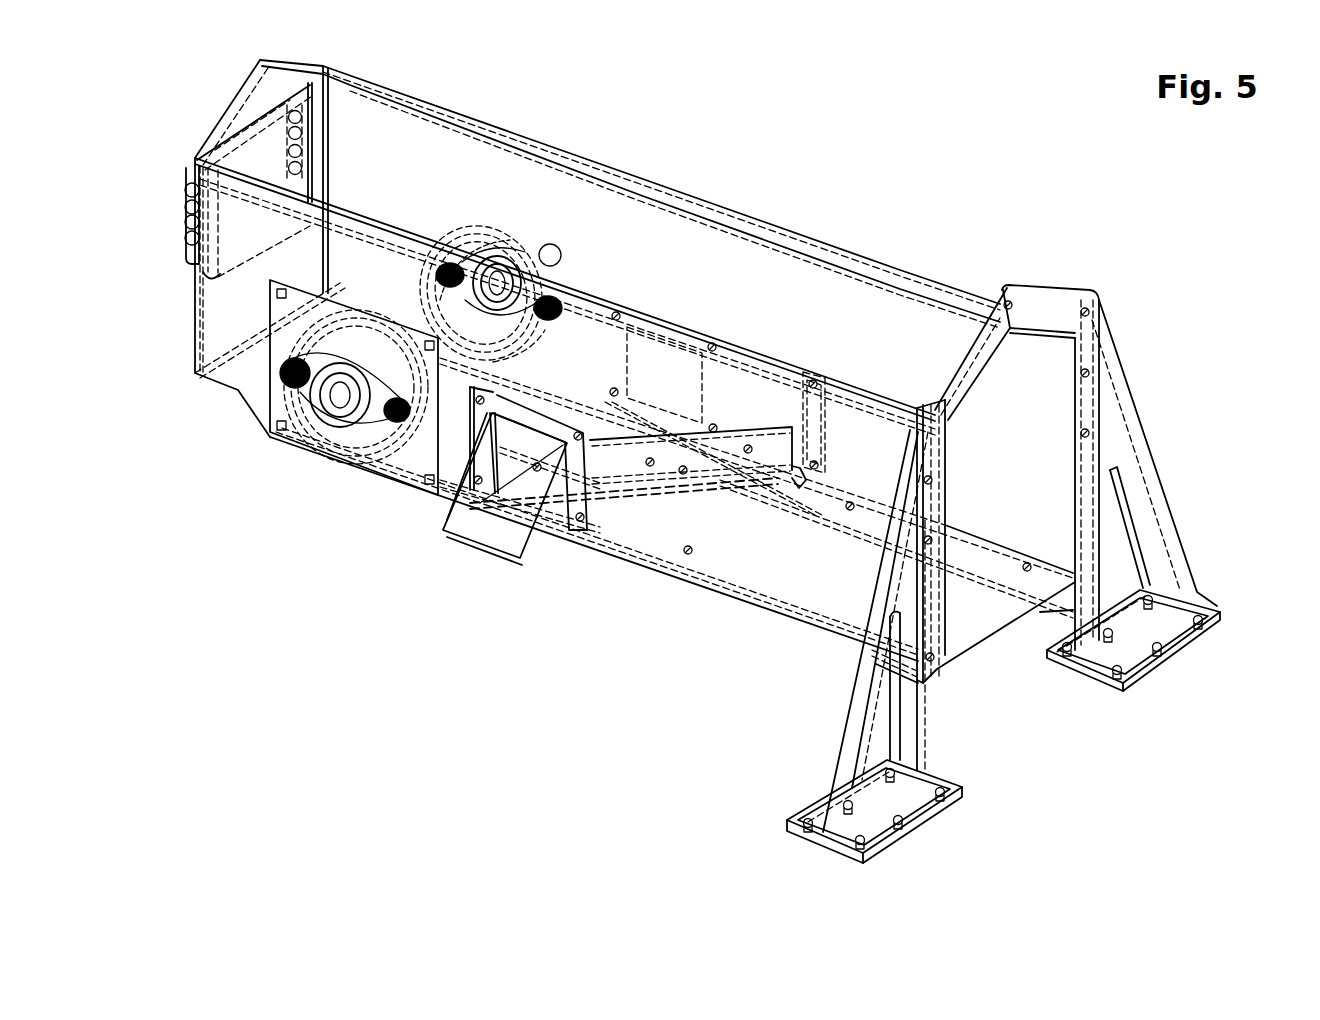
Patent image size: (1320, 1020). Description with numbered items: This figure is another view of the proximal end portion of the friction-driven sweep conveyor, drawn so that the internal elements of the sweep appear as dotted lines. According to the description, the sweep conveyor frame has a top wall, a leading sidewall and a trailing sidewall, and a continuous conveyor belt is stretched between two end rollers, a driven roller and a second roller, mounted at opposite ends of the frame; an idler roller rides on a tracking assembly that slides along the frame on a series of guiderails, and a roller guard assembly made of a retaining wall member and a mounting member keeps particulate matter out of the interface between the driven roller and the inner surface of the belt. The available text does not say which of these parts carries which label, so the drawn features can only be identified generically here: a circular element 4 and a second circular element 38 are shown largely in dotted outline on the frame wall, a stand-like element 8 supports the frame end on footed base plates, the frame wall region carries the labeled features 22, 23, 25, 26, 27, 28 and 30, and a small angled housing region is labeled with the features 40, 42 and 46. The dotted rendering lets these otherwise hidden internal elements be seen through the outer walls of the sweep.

The fan 4 is at (488, 238).
The mounting stand bracket 8 is at (1058, 289).
The front panel 22 is at (778, 402).
The access opening 23 is at (830, 434).
The window opening 25 is at (628, 343).
The mounting plate 26 is at (737, 430).
The rod 27 is at (682, 490).
The fastener 28 is at (508, 458).
The bracket 30 is at (807, 481).
The fan assembly 38 is at (428, 556).
The housing 40 is at (521, 477).
The cover plate 42 is at (556, 543).
The mounting flange 46 is at (521, 398).